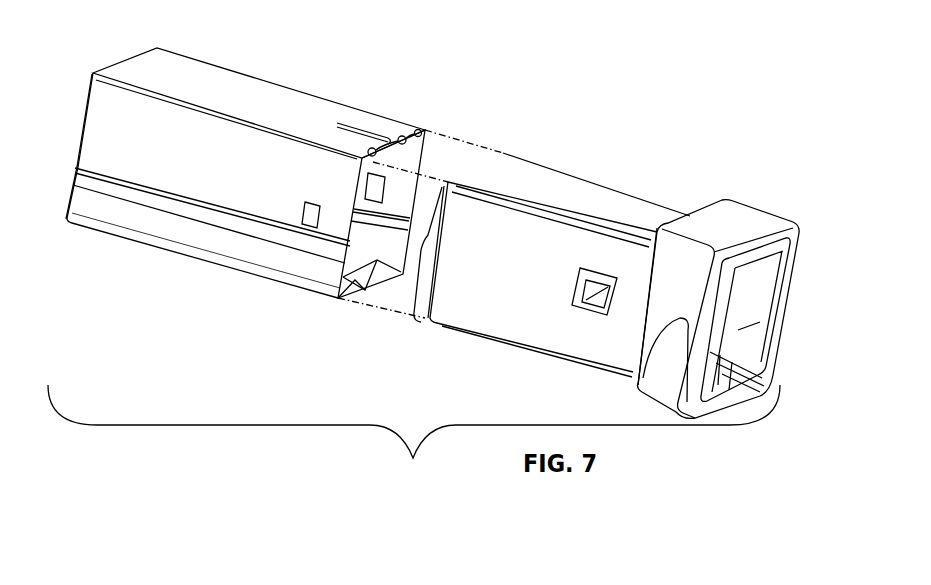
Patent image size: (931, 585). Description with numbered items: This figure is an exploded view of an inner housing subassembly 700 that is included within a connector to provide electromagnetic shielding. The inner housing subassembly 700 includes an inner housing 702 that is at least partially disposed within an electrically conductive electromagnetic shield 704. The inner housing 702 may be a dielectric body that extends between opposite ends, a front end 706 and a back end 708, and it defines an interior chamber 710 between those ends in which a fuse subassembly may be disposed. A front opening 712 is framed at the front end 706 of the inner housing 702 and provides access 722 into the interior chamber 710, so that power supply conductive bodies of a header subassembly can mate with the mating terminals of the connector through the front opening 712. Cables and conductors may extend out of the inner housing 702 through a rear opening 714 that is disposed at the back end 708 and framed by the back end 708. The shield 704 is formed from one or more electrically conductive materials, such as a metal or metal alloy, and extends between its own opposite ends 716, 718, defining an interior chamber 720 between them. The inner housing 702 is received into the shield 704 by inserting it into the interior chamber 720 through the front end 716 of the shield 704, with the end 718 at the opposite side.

The inner housing subassembly 700 is at (414, 438).
The inner housing 702 is at (671, 180).
The electromagnetic shield 704 is at (304, 76).
The front end 706 is at (792, 268).
The back end 708 is at (450, 200).
The interior chamber 710 is at (762, 313).
The front opening 712 is at (633, 380).
The rear opening 714 is at (420, 250).
The front end of shield 716 is at (425, 150).
The back end of shield 718 is at (83, 118).
The interior chamber of shield 720 is at (398, 250).
The access 722 is at (745, 337).